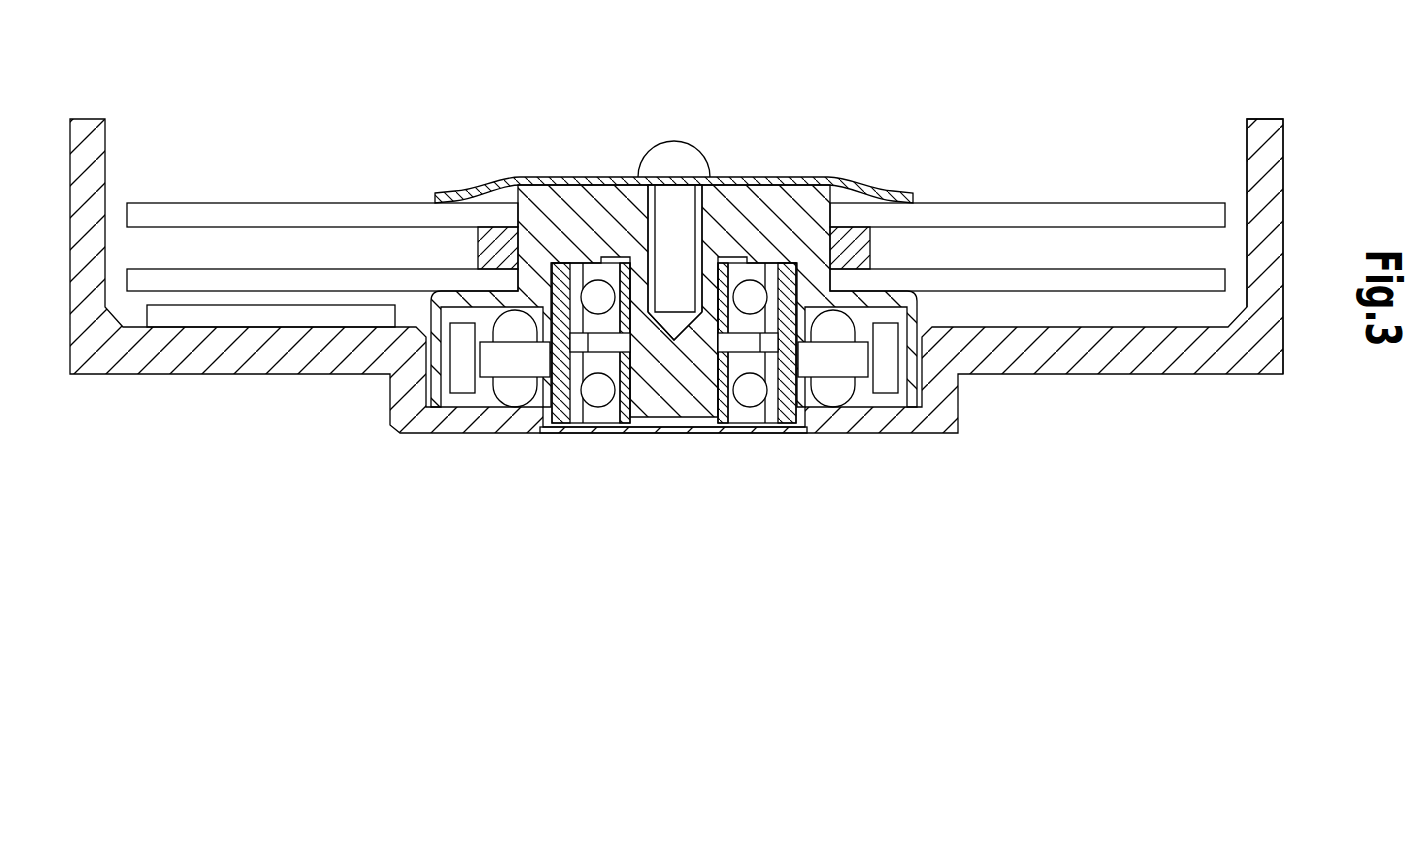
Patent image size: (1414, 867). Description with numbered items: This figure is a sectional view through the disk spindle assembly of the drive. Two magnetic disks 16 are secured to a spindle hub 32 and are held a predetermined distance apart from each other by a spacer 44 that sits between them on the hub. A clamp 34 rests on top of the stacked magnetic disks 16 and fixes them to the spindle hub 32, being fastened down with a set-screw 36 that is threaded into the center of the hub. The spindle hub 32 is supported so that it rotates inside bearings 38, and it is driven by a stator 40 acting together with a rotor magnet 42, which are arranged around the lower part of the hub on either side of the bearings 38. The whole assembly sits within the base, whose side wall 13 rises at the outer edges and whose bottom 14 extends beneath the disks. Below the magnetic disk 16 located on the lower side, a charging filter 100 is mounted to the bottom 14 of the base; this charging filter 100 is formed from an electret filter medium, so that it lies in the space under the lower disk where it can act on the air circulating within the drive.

The housing side wall 13 is at (1285, 155).
The bottom of the base 14 is at (337, 357).
The magnetic disk 16 is at (268, 177).
The spindle hub 32 is at (572, 220).
The clamp 34 is at (775, 173).
The set-screw 36 is at (697, 140).
The bearing 38 is at (595, 392).
The stator 40 is at (513, 392).
The rotor magnet 42 is at (458, 382).
The spacer 44 is at (457, 243).
The charging filter 100 is at (210, 317).